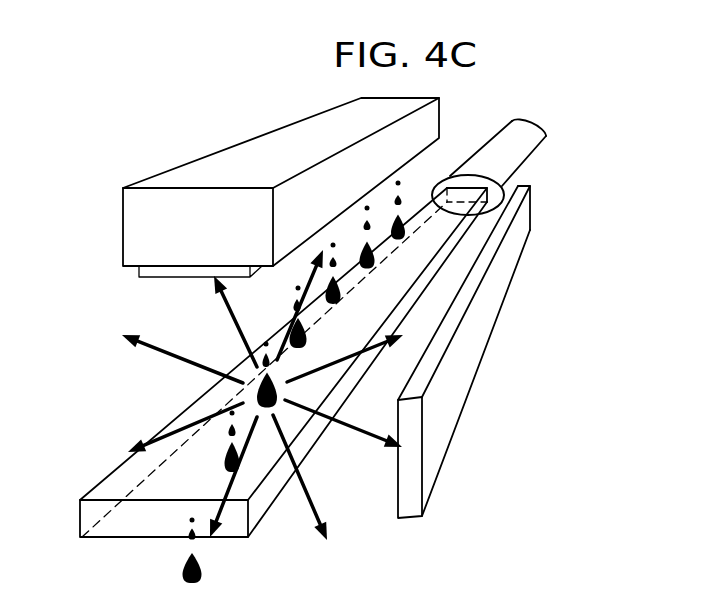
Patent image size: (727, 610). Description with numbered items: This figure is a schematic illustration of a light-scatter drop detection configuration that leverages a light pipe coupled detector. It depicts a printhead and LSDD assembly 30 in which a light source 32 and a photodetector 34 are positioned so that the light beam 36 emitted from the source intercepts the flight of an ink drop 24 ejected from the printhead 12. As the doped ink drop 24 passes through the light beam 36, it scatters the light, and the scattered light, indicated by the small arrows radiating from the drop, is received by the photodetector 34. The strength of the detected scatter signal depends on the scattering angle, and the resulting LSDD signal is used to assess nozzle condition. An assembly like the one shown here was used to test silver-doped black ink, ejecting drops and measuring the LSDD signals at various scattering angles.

The printhead and LSDD assembly 30 is at (637, 59).
The printhead 12 is at (123, 218).
The ink drop 24 is at (182, 560).
The light source 32 is at (521, 118).
The photodetector 34 is at (531, 218).
The light beam 36 is at (79, 517).